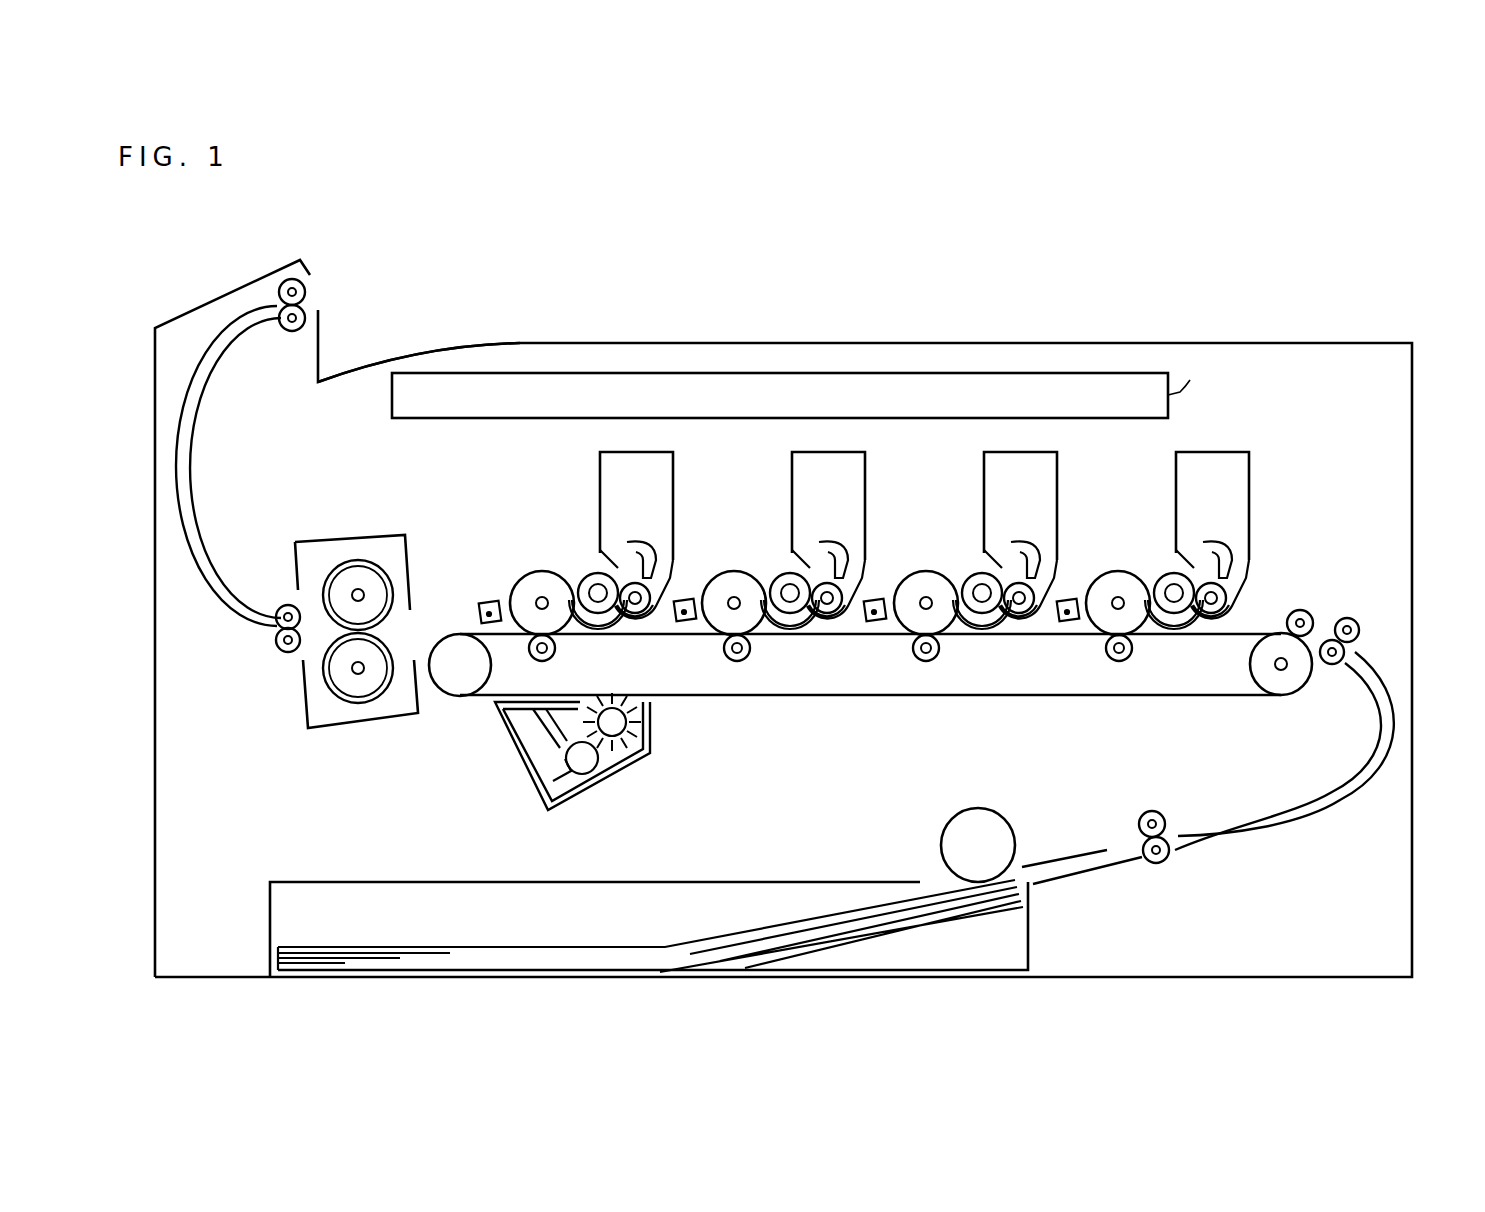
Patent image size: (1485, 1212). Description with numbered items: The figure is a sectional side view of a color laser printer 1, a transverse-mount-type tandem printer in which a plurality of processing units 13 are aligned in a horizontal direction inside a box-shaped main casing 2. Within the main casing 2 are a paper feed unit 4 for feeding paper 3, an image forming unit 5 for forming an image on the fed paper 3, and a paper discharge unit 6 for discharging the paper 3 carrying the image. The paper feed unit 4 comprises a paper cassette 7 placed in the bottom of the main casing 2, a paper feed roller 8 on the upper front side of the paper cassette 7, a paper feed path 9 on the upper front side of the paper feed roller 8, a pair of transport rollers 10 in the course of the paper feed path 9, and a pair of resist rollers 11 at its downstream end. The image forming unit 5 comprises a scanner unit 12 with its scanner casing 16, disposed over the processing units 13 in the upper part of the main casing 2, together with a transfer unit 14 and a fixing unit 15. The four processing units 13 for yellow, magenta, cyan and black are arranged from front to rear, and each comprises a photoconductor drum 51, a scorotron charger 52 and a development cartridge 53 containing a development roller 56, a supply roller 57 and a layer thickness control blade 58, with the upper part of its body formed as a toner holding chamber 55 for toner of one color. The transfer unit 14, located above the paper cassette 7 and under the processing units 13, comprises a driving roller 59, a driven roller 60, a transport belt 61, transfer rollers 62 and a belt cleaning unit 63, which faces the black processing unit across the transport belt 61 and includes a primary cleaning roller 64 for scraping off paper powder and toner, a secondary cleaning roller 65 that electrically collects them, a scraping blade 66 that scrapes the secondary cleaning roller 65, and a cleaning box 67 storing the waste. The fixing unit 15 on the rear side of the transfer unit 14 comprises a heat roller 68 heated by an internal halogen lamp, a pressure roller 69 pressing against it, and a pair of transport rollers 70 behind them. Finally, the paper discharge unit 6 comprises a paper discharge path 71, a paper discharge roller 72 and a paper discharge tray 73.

The color laser printer 1 is at (630, 262).
The main casing 2 is at (1400, 492).
The paper 3 is at (545, 952).
The paper feed unit 4 is at (1385, 855).
The image forming unit 5 is at (1262, 470).
The paper discharge unit 6 is at (212, 340).
The paper cassette 7 is at (333, 880).
The paper feed roller 8 is at (940, 836).
The paper feed path 9 is at (1282, 825).
The transport rollers 10 is at (1172, 848).
The resist rollers 11 is at (1348, 648).
The scanner unit 12 is at (908, 365).
The processing units 13 is at (535, 485).
The transfer unit 14 is at (1236, 705).
The fixing unit 15 is at (329, 587).
The scanner casing 16 is at (1192, 378).
The photoconductor drum 51 is at (525, 580).
The scorotron charger 52 is at (487, 598).
The development cartridge 53 is at (650, 445).
The toner holding chamber 55 is at (606, 460).
The development roller 56 is at (588, 578).
The supply roller 57 is at (638, 613).
The layer thickness control blade 58 is at (605, 562).
The driving roller 59 is at (465, 682).
The driven roller 60 is at (1283, 682).
The transport belt 61 is at (1015, 698).
The transfer rollers 62 is at (535, 660).
The belt cleaning unit 63 is at (554, 785).
The primary cleaning roller 64 is at (612, 742).
The secondary cleaning roller 65 is at (586, 776).
The scraping blade 66 is at (558, 782).
The cleaning box 67 is at (538, 750).
The heat roller 68 is at (335, 590).
The pressure roller 69 is at (345, 660).
The transport rollers 70 is at (276, 638).
The paper discharge path 71 is at (196, 466).
The paper discharge roller 72 is at (306, 292).
The paper discharge tray 73 is at (445, 344).